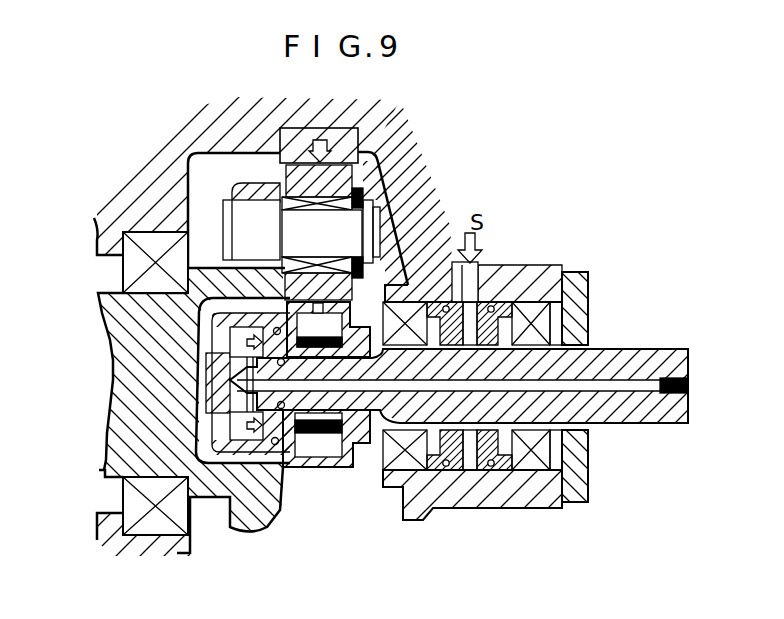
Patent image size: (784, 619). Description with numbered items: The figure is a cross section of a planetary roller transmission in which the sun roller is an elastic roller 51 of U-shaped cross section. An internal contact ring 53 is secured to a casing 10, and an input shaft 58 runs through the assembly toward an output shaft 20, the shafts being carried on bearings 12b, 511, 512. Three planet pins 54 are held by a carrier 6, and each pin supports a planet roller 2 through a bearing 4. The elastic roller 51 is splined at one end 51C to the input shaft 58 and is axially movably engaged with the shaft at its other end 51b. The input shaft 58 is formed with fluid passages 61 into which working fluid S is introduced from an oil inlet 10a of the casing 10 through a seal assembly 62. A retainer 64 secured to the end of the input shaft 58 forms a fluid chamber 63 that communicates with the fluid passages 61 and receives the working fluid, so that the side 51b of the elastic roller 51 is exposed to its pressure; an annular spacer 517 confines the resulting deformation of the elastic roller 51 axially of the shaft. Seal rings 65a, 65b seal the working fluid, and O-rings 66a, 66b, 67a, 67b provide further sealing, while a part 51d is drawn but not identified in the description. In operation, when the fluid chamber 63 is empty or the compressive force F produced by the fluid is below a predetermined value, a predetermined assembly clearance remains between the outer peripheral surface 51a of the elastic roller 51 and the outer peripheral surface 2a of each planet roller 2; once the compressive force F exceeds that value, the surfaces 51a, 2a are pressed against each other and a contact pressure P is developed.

The planet roller 2 is at (383, 165).
The outer peripheral surface of planet roller 2a is at (345, 172).
The bearing for planet roller 4 is at (290, 190).
The carrier 6 is at (255, 470).
The casing 10 is at (267, 137).
The oil inlet 10a is at (470, 275).
The bearing 12b is at (157, 535).
The output shaft 20 is at (103, 470).
The elastic roller 51 is at (342, 452).
The outer peripheral surface of elastic roller 51a is at (207, 250).
The other end of elastic roller 51b is at (238, 356).
The one end of elastic roller 51C is at (358, 442).
The bearing 51d is at (200, 272).
The bearing 511 is at (408, 462).
The bearing 512 is at (550, 470).
The annular spacer 517 is at (316, 434).
The internal contact ring 53 is at (335, 140).
The planet pin 54 is at (393, 218).
The input shaft 58 is at (592, 350).
The fluid passage 61 is at (588, 280).
The seal assembly 62 is at (482, 470).
The fluid chamber 63 is at (214, 462).
The retainer 64 is at (207, 392).
The seal ring 65a is at (496, 470).
The seal ring 65b is at (466, 462).
The O-ring 66a is at (491, 307).
The O-ring 66b is at (452, 300).
The O-ring 67a is at (282, 410).
The O-ring 67b is at (274, 446).